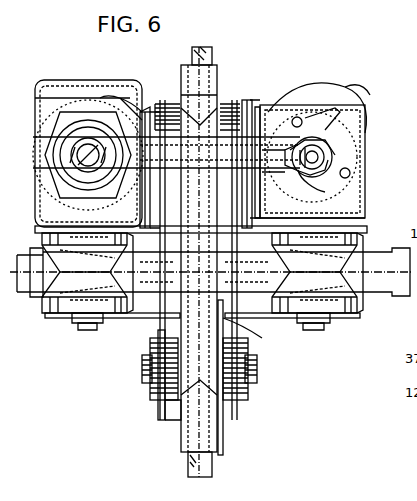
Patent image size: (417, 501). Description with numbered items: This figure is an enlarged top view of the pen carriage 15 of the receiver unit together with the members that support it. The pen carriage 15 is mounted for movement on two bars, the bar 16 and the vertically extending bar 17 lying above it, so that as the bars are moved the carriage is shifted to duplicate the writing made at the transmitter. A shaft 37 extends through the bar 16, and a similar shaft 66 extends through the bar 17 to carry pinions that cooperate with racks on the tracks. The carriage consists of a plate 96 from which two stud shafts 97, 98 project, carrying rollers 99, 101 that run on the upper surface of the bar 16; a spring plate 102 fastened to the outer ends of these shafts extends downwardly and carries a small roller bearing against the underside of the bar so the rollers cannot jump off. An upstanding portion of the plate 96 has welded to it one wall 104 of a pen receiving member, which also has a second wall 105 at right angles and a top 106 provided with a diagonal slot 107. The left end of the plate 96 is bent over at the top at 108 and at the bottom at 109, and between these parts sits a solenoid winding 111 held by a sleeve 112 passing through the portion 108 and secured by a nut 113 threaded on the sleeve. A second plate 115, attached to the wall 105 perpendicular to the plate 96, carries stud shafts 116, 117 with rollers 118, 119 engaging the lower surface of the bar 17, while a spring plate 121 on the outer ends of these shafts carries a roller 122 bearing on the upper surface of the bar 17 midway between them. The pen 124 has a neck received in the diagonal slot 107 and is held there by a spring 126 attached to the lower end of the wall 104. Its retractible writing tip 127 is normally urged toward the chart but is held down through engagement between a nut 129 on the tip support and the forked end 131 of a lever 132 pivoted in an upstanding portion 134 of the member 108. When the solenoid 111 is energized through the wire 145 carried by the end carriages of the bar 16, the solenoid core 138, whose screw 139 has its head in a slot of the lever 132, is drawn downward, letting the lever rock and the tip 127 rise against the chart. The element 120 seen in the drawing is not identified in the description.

The pen carriage 15 is at (279, 78).
The bar 16 is at (372, 244).
The vertically extending bar 17 is at (223, 450).
The shaft 37 is at (392, 298).
The shaft 66 is at (212, 472).
The plate 96 is at (368, 228).
The stud shaft 97 is at (310, 331).
The stud shaft 98 is at (85, 331).
The roller 99 is at (362, 312).
The roller 101 is at (45, 302).
The spring plate 102 is at (150, 318).
The wall 104 is at (340, 212).
The second wall 105 is at (258, 110).
The top 106 is at (288, 108).
The diagonal slot 107 is at (330, 145).
The bent-over top portion 108 is at (38, 118).
The bent-over bottom portion 109 is at (110, 112).
The solenoid winding 111 is at (82, 120).
The sleeve 112 is at (118, 108).
The nut 113 is at (85, 140).
The second plate 115 is at (257, 415).
The stud shaft 116 is at (142, 370).
The stud shaft 117 is at (246, 100).
The roller 118 is at (168, 420).
The roller 119 is at (176, 108).
The shaft component 120 is at (409, 438).
The spring plate 121 is at (158, 402).
The roller 122 is at (291, 331).
The pen 124 is at (345, 74).
The spring 126 is at (362, 96).
The retractible stylus or writing tip 127 is at (320, 155).
The nut 129 is at (320, 195).
The forked end 131 is at (304, 142).
The lever 132 is at (265, 178).
The upstanding portion 134 is at (146, 112).
The solenoid core 138 is at (110, 137).
The screw 139 is at (62, 182).
The wire 145 is at (18, 270).